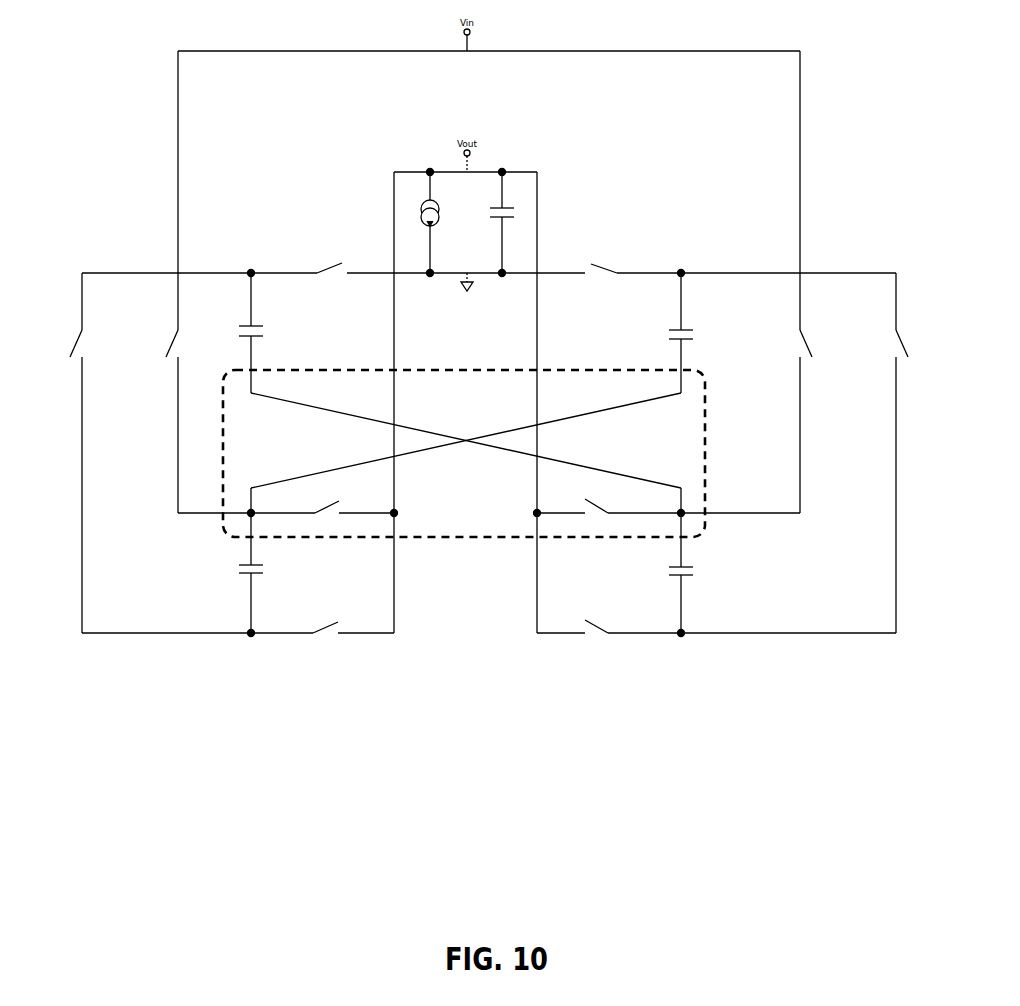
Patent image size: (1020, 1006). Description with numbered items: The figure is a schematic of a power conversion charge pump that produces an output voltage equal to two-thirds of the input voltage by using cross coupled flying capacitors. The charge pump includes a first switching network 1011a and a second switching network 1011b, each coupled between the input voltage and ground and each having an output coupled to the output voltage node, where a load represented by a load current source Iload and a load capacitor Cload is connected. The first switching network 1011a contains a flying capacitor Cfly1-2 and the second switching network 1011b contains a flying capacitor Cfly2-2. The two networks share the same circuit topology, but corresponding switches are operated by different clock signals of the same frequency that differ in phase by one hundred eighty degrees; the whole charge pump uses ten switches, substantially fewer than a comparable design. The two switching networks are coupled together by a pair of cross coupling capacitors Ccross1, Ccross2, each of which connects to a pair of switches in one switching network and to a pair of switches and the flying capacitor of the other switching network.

The first switching network 1011a is at (138, 205).
The second switching network 1011b is at (839, 230).
The cross coupling capacitor Ccross1 is at (269, 333).
The cross coupling capacitor Ccross2 is at (661, 333).
The flying capacitor Cfly1-2 is at (267, 573).
The flying capacitor Cfly2-2 is at (662, 573).
The load capacitor Cload is at (512, 223).
The load current source Iload is at (440, 223).